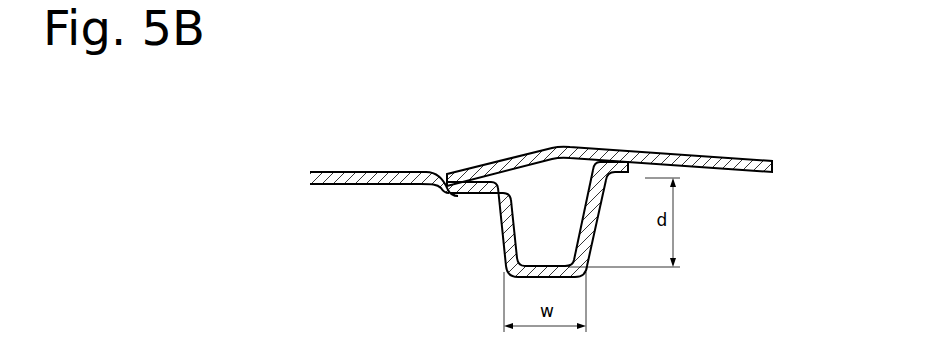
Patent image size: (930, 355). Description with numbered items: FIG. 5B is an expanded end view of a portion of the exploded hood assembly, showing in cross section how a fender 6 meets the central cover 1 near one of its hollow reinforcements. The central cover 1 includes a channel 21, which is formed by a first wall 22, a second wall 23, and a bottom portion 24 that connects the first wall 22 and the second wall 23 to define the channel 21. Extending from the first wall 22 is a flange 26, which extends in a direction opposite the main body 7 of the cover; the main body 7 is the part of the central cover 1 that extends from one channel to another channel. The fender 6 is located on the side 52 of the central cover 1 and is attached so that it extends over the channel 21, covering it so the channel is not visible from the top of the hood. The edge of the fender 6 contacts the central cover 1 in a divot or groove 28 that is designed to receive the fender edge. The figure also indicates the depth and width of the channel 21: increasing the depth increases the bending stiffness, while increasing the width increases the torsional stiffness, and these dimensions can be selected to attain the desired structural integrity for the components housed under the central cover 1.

The central cover 1 is at (535, 187).
The fender 6 is at (703, 158).
The main body 7 is at (353, 160).
The channel 21 is at (535, 214).
The first wall 22 is at (583, 232).
The second wall 23 is at (505, 220).
The bottom portion 24 is at (530, 273).
The flange 26 is at (623, 160).
The groove 28 is at (449, 199).
The side 52 is at (717, 214).